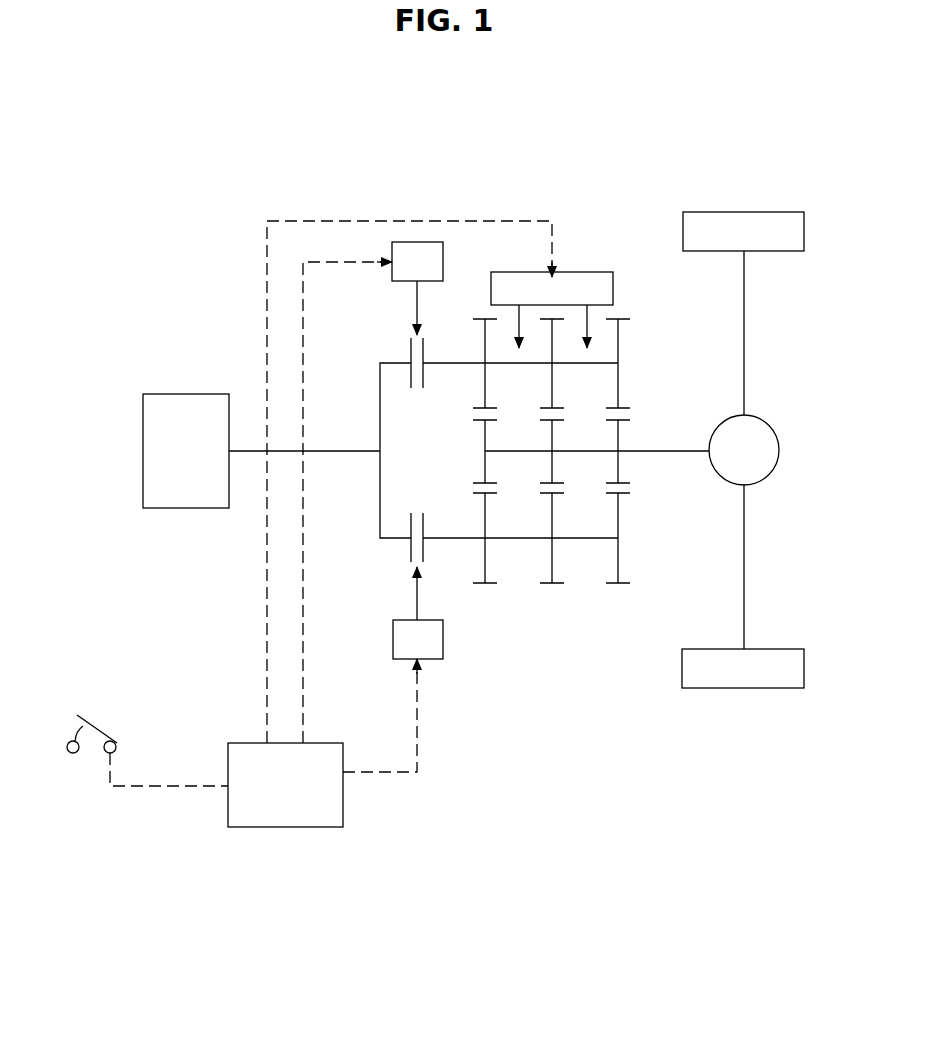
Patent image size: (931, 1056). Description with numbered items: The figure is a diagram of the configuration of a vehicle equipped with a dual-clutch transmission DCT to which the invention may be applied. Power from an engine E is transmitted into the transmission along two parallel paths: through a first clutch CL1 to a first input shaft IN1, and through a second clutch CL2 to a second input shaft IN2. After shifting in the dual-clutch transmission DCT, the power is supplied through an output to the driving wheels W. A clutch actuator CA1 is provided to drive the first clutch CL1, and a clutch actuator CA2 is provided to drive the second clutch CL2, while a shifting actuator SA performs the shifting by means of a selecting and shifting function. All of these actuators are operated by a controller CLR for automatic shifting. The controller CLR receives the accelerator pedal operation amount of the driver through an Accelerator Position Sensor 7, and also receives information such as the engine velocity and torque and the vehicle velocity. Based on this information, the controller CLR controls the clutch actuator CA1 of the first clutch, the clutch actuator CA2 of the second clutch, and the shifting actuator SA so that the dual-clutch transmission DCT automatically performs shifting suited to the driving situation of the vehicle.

The dual-clutch transmission DCT is at (392, 198).
The engine E is at (180, 400).
The first clutch CL1 is at (411, 350).
The second clutch CL2 is at (410, 553).
The first input shaft IN1 is at (600, 362).
The second input shaft IN2 is at (600, 538).
The shifting actuator SA is at (593, 277).
The clutch actuator of first clutch CA1 is at (438, 250).
The clutch actuator of second clutch CA2 is at (443, 655).
The driving wheels W is at (743, 220).
The controller CLR is at (288, 820).
The Accelerator Position Sensor 7 is at (110, 741).